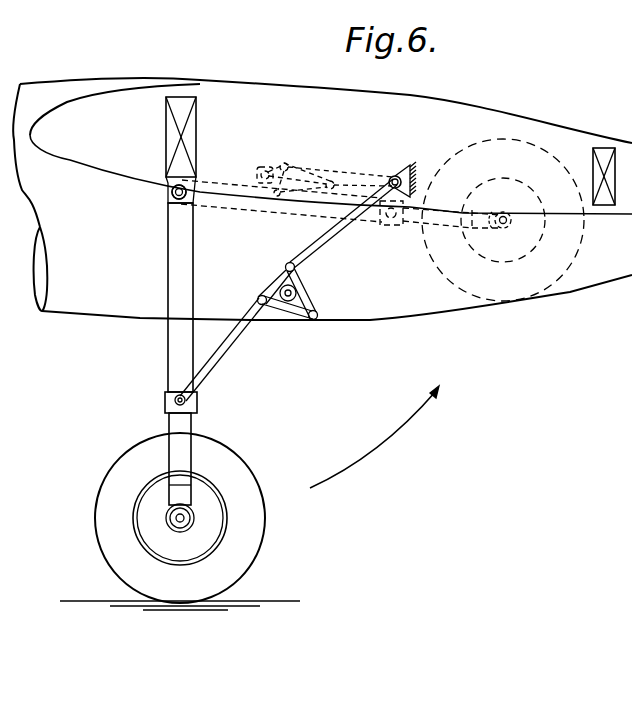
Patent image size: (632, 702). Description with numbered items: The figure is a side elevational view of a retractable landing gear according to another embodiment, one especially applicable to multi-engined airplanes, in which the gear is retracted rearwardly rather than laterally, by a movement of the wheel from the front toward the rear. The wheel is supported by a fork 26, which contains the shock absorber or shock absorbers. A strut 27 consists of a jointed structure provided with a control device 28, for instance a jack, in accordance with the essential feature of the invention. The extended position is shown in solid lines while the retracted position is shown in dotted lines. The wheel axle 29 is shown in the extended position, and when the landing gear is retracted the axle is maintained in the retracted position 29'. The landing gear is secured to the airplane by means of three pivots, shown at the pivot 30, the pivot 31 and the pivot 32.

The fork 26 is at (180, 355).
The strut 27 is at (237, 343).
The control device 28 is at (303, 298).
The wheel axle 29 is at (183, 518).
The retracted position of wheel axle 29' is at (382, 243).
The pivot 30 is at (168, 181).
The pivot 31 is at (193, 183).
The pivot 32 is at (399, 166).